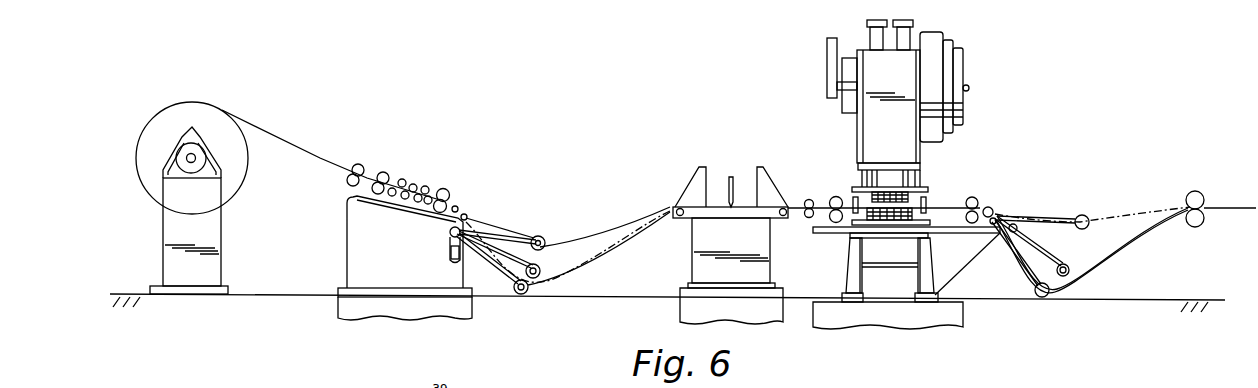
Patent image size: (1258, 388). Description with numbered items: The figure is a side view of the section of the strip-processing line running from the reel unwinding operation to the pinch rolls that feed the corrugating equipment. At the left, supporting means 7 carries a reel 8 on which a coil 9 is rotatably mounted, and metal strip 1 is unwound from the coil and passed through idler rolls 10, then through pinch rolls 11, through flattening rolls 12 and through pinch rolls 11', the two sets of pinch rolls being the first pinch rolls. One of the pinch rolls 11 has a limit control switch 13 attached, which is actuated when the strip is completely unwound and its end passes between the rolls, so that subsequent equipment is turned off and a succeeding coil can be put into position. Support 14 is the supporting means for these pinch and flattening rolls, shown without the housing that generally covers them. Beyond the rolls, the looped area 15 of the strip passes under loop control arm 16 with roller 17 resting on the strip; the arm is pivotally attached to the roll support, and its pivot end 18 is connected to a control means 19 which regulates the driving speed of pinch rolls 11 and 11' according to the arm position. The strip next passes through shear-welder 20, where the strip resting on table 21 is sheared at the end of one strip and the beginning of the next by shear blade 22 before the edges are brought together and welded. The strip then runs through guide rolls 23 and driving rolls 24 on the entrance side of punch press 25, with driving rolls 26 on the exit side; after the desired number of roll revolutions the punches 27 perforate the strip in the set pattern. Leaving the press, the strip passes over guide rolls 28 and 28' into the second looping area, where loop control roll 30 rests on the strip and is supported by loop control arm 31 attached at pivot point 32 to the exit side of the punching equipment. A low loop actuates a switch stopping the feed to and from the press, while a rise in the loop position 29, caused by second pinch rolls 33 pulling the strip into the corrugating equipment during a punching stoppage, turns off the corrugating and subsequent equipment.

The metal strip 1 is at (283, 140).
The supporting means 7 is at (217, 247).
The reel 8 is at (191, 175).
The coil 9 is at (143, 143).
The idler rolls 10 is at (356, 164).
The pinch rolls 11 is at (380, 163).
The pinch rolls 11' is at (454, 190).
The flattening rolls 12 is at (425, 186).
The limit control switch 13 is at (390, 187).
The support 14 is at (359, 252).
The looped area 15 is at (561, 271).
The loop control arm 16 is at (509, 255).
The roller 17 is at (544, 250).
The pivot end 18 is at (450, 234).
The control means 19 is at (449, 258).
The shear-welder 20 is at (697, 242).
The table 21 is at (718, 205).
The shear blade 22 is at (735, 190).
The guide rolls 23 is at (807, 199).
The driving rolls 24 is at (835, 196).
The punch press 25 is at (862, 133).
The driving rolls 26 is at (972, 197).
The punches 27 is at (913, 200).
The guide roll 28 is at (1003, 194).
The guide roll 28' is at (1036, 198).
The loop position 29 is at (1100, 257).
The loop control roll 30 is at (1070, 265).
The loop control arm 31 is at (1050, 258).
The pivot point 32 is at (985, 235).
The second pinch rolls 33 is at (1189, 193).